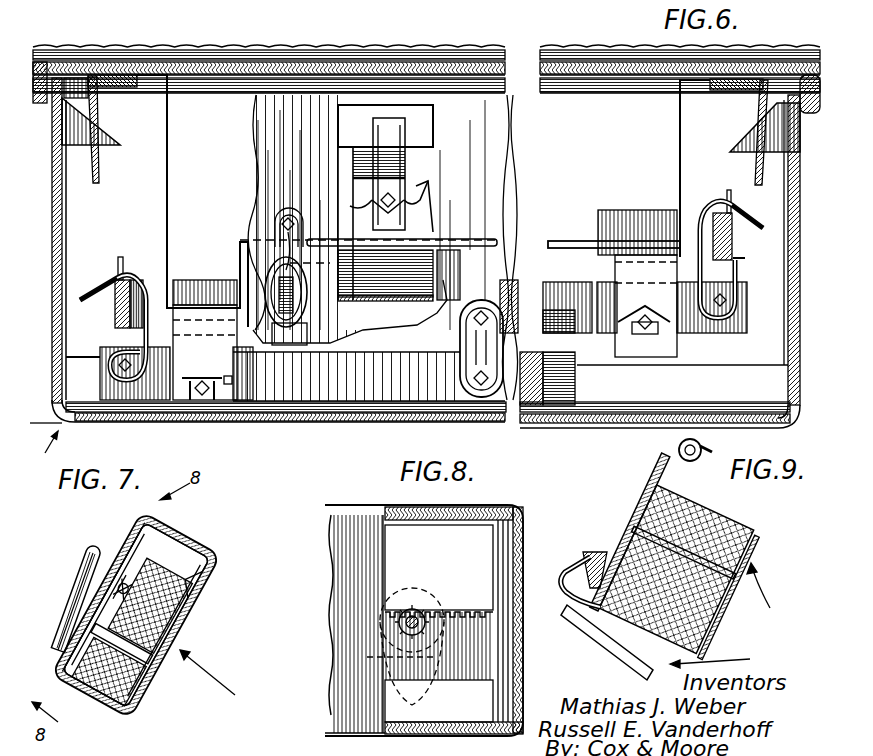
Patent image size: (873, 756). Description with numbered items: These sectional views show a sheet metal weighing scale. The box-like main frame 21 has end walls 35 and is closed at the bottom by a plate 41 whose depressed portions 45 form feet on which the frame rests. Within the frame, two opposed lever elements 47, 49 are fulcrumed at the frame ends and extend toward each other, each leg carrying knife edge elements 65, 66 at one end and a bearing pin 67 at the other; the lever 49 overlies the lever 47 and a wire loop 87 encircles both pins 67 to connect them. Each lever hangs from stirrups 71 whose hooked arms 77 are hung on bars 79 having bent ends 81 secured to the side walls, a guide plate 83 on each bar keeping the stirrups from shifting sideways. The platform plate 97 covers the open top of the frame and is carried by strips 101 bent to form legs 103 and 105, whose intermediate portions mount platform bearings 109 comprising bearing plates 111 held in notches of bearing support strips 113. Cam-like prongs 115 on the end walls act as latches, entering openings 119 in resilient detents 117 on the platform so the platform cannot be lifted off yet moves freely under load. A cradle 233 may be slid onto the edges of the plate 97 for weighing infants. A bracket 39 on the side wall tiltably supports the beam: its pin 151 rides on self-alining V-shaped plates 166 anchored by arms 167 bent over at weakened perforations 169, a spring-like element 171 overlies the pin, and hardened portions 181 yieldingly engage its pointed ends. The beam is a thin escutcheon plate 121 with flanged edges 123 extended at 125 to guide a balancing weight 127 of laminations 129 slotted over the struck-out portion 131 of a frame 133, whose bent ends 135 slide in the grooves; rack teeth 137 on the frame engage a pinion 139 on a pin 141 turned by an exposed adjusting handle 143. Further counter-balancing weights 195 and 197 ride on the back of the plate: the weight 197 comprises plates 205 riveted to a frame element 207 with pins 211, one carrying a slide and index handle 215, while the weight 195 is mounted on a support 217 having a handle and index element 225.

In FIG. 6, the main frame 21 is at (46, 446).
In FIG. 6, the end walls 35 is at (60, 209).
In FIG. 6, the beam supporting bracket 39 is at (336, 134).
In FIG. 6, the bottom plate 41 is at (233, 3).
In FIG. 6, the feet forming depressions 45 is at (124, 3).
In FIG. 6, the lever element 47 is at (320, 400).
In FIG. 6, the lever element 49 is at (512, 251).
In FIG. 6, the knife edge element 65 is at (110, 384).
In FIG. 6, the knife edge element 66 is at (190, 401).
In FIG. 6, the bearing pin 67 is at (481, 313).
In FIG. 6, the stirrup 71 is at (120, 344).
In FIG. 6, the hooked arm 77 is at (104, 291).
In FIG. 6, the strap or bar 79 is at (129, 281).
In FIG. 6, the bent ends 81 is at (200, 290).
In FIG. 6, the guide plate 83 is at (120, 257).
In FIG. 6, the loop 87 is at (465, 386).
In FIG. 6, the plate 97 is at (430, 66).
In FIG. 6, the strip 101 is at (563, 241).
In FIG. 6, the leg 103 is at (168, 184).
In FIG. 6, the leg 105 is at (679, 166).
In FIG. 6, the platform bearing 109 is at (208, 403).
In FIG. 6, the bearing plate 111 is at (208, 376).
In FIG. 6, the bearing support strip 113 is at (226, 363).
In FIG. 6, the sheet metal element 115 is at (104, 132).
In FIG. 6, the detent 117 is at (99, 181).
In FIG. 6, the opening 119 is at (100, 156).
In FIG. 7, the escutcheon plate 121 is at (125, 546).
In FIG. 8, the escutcheon plate 121 is at (333, 556).
In FIG. 8, the flanged edges 123 is at (356, 506).
In FIG. 7, the extended flanges 125 is at (200, 536).
In FIG. 7, the balancing weight 127 is at (224, 678).
In FIG. 7, the laminations 129 is at (195, 629).
In FIG. 7, the struck-out portion 131 is at (150, 676).
In FIG. 7, the frame 133 is at (140, 706).
In FIG. 8, the frame 133 is at (486, 507).
In FIG. 7, the bent ends 135 is at (138, 526).
In FIG. 8, the bent ends 135 is at (480, 558).
In FIG. 7, the rack teeth 137 is at (190, 586).
In FIG. 8, the rack teeth 137 is at (440, 649).
In FIG. 7, the pinion 139 is at (195, 606).
In FIG. 8, the pinion 139 is at (398, 620).
In FIG. 7, the pin 141 is at (100, 586).
In FIG. 8, the pin 141 is at (418, 640).
In FIG. 7, the adjusting handle 143 is at (88, 564).
In FIG. 8, the adjusting handle 143 is at (330, 657).
In FIG. 6, the pin 151 is at (380, 196).
In FIG. 6, the V-shaped plate 166 is at (365, 209).
In FIG. 6, the arm 167 is at (406, 201).
In FIG. 6, the drilled perforation 169 is at (434, 213).
In FIG. 6, the spring-like element 171 is at (452, 273).
In FIG. 6, the hardened portions 181 is at (407, 154).
In FIG. 9, the counter-balancing weight 195 is at (727, 656).
In FIG. 9, the counter-balancing weight 197 is at (776, 592).
In FIG. 9, the sheet metal plates 205 is at (752, 522).
In FIG. 9, the frame element 207 is at (652, 502).
In FIG. 9, the pins 211 is at (686, 483).
In FIG. 9, the slide and index handle 215 is at (678, 450).
In FIG. 9, the frame or support 217 is at (598, 654).
In FIG. 9, the handle and index element 225 is at (571, 591).
In FIG. 6, the cradle 233 is at (355, 46).